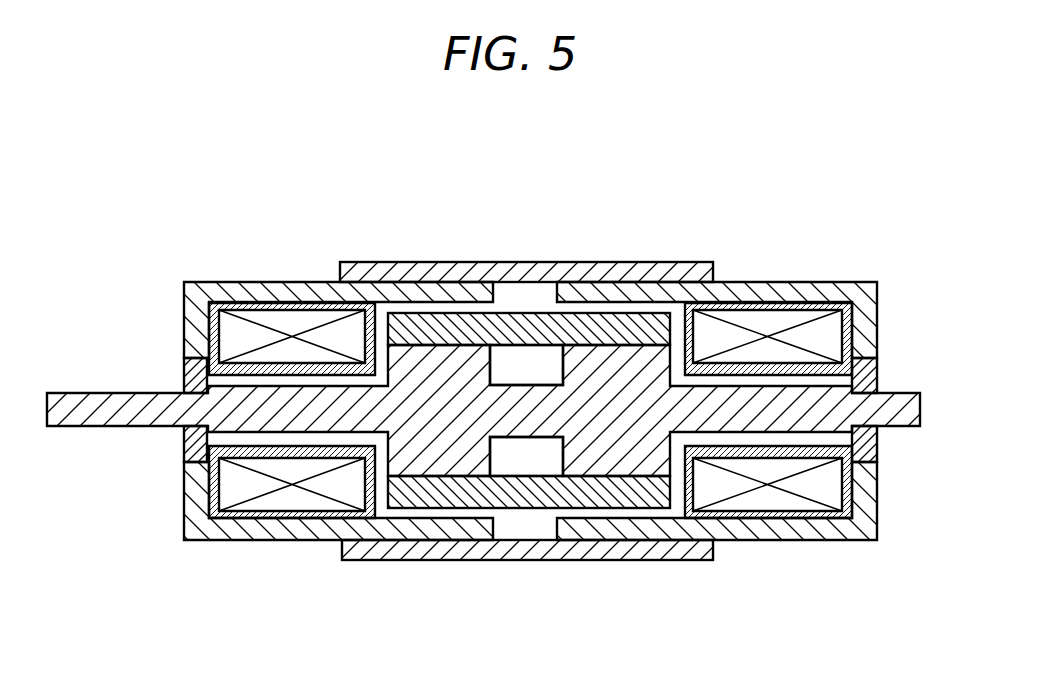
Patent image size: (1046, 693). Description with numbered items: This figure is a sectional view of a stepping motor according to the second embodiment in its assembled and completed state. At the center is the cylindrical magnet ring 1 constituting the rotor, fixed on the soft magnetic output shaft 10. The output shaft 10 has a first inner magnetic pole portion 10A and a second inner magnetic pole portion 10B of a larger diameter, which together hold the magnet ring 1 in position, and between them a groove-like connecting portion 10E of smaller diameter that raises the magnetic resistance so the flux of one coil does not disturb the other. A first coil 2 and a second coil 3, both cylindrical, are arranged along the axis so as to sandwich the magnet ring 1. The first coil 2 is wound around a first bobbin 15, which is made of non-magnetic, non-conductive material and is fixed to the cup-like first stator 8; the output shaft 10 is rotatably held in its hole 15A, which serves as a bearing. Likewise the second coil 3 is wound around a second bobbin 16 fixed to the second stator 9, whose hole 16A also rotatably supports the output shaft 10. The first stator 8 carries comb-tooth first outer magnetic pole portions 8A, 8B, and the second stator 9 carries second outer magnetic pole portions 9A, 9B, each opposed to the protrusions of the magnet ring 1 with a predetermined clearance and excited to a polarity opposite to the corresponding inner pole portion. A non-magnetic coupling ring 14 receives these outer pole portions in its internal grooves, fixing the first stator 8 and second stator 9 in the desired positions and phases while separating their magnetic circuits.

The magnet ring 1 is at (530, 500).
The first coil 2 is at (273, 503).
The second coil 3 is at (782, 502).
The first stator 8 is at (338, 411).
The first outer magnetic pole portion 8A is at (412, 292).
The first outer magnetic pole portion 8B is at (467, 533).
The second stator 9 is at (717, 413).
The second outer magnetic pole portion 9A is at (582, 293).
The second outer magnetic pole portion 9B is at (655, 530).
The output shaft 10 is at (72, 415).
The first inner magnetic pole portion 10A is at (432, 478).
The second inner magnetic pole portion 10B is at (594, 486).
The connecting portion 10E is at (523, 385).
The coupling ring 14 is at (518, 280).
The first bobbin 15 is at (183, 347).
The hole 15A is at (183, 450).
The second bobbin 16 is at (800, 358).
The hole 16A is at (872, 388).